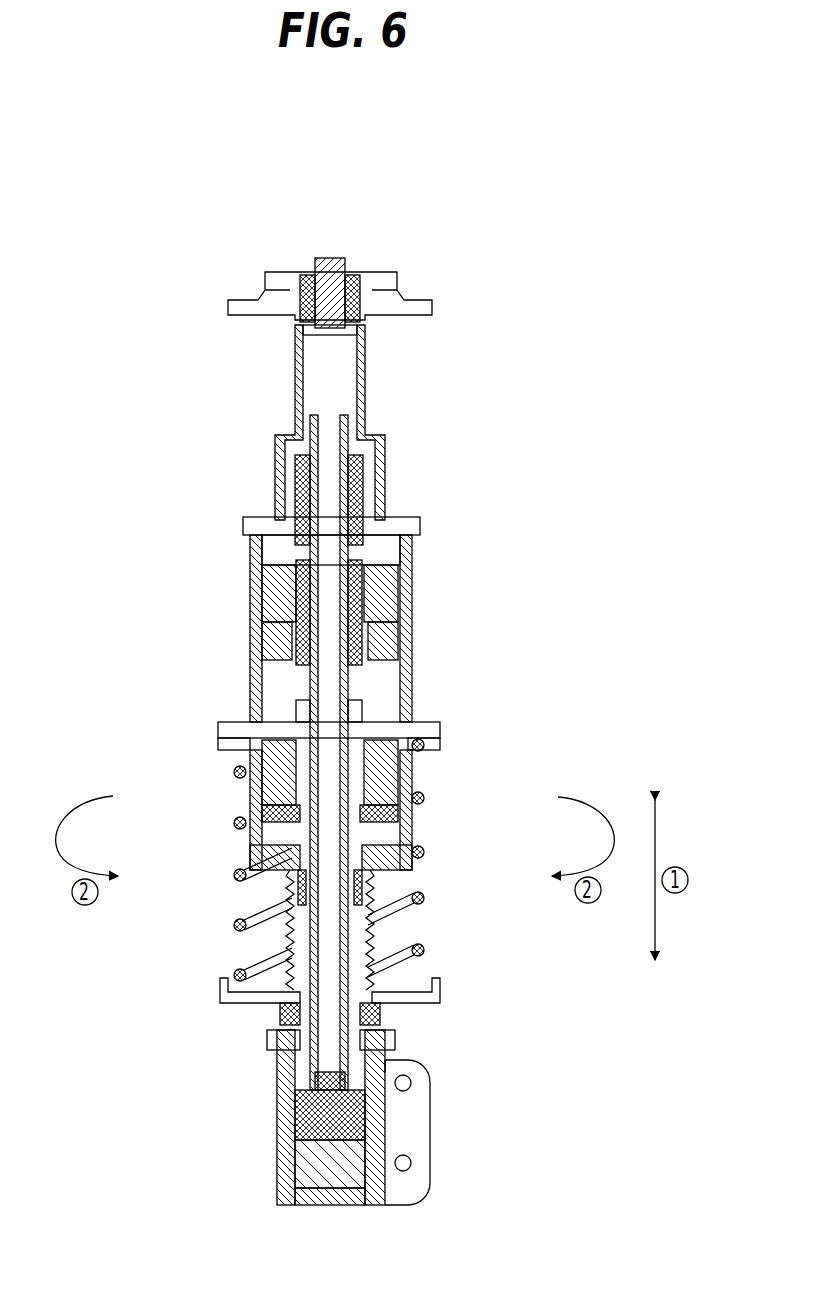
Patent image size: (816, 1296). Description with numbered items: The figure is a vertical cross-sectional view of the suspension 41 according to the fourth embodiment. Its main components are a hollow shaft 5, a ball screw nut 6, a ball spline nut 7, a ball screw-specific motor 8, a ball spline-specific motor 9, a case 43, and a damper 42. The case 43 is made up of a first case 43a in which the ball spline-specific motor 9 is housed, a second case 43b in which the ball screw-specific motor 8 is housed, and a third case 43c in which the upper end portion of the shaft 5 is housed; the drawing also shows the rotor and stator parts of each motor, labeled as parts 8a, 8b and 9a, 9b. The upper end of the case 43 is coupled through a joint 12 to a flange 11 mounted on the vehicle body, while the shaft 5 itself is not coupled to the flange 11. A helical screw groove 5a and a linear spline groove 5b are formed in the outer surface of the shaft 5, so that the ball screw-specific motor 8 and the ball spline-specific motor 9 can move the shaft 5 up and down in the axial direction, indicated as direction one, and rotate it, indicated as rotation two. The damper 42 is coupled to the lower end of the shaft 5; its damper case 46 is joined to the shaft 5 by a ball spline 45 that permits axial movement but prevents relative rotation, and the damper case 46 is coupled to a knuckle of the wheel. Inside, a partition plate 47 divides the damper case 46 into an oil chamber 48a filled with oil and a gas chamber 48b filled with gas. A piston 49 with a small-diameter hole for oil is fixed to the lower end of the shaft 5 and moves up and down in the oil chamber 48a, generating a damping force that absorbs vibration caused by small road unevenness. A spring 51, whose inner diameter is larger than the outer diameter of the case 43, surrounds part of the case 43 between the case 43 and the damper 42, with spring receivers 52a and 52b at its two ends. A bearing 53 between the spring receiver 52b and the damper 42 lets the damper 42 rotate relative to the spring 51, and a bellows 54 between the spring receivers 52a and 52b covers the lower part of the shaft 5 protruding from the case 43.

The suspension 41 is at (350, 121).
The joint 12 is at (342, 300).
The flange 11 is at (396, 292).
The case 43 is at (284, 597).
The first case 43a is at (252, 800).
The second case 43b is at (250, 628).
The third case 43c is at (275, 465).
The ball screw nut 6 is at (378, 492).
The shaft 5 is at (380, 752).
The helical screw groove 5a is at (380, 640).
The linear spline groove 5b is at (362, 715).
The ball screw-specific motor 8 is at (387, 611).
The upper bearing inner ring 8a is at (405, 590).
The upper bearing outer ring 8b is at (405, 606).
The ball spline-specific motor 9 is at (387, 781).
The lower bearing inner ring 9a is at (405, 780).
The lower bearing outer ring 9b is at (420, 798).
The spring receiver 52a is at (222, 736).
The spring receiver 52b is at (220, 996).
The ball spline nut 7 is at (378, 902).
The spring 51 is at (232, 930).
The bellows 54 is at (385, 950).
The bearing 53 is at (280, 1010).
The ball spline 45 is at (267, 1045).
The piston 49 is at (392, 1072).
The damper 42 is at (333, 1118).
The oil chamber 48a is at (370, 1125).
The partition plate 47 is at (297, 1150).
The damper case 46 is at (295, 1185).
The gas chamber 48b is at (400, 1190).